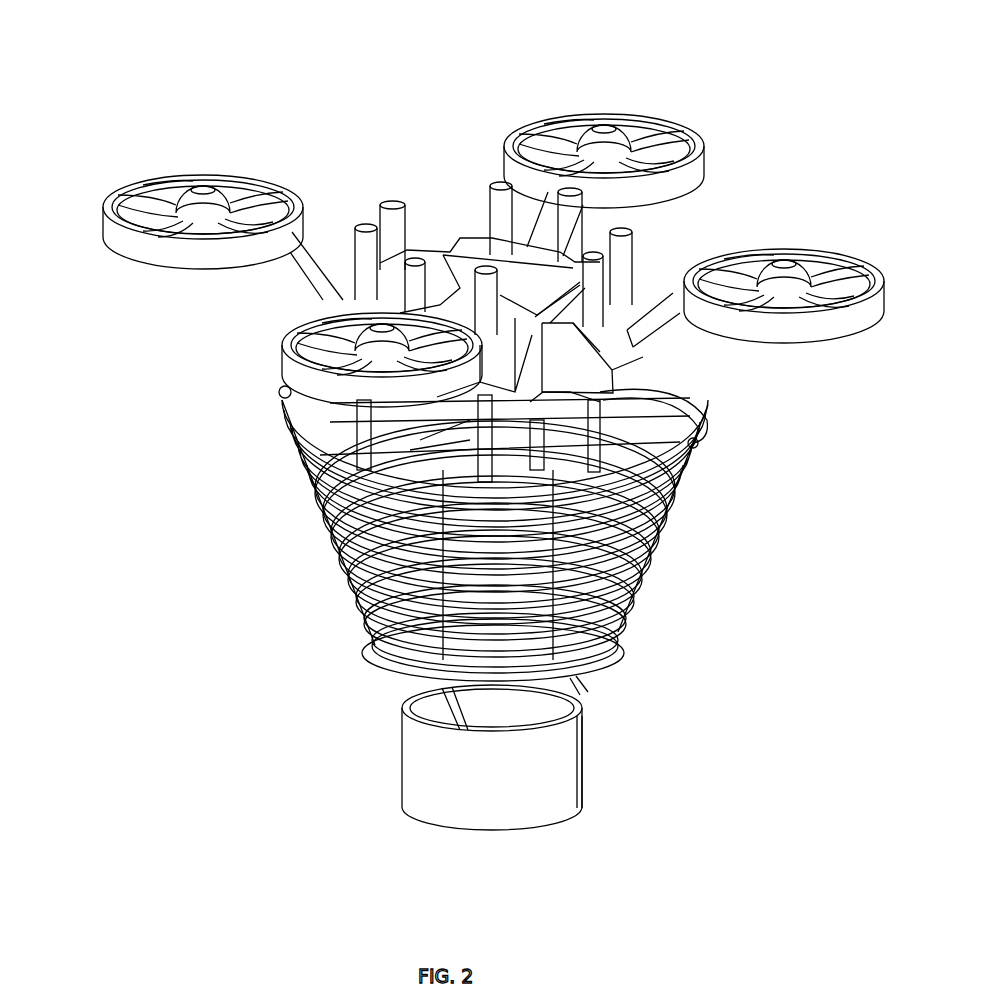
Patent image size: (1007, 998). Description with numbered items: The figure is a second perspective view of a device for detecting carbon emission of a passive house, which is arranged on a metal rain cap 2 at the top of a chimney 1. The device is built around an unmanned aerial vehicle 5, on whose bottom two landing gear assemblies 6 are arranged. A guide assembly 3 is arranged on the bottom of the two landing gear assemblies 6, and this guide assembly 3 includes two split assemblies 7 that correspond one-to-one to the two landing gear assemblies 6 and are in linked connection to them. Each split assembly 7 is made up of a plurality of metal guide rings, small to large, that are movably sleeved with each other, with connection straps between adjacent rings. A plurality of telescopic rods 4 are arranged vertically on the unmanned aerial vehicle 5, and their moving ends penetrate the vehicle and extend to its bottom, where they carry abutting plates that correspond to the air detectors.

The chimney 1 is at (477, 760).
The metal rain cap 2 is at (578, 662).
The guide assembly 3 is at (680, 530).
The telescopic rods 4 is at (624, 254).
The unmanned aerial vehicle 5 is at (452, 190).
The landing gear assemblies 6 is at (248, 372).
The split assemblies 7 is at (293, 545).